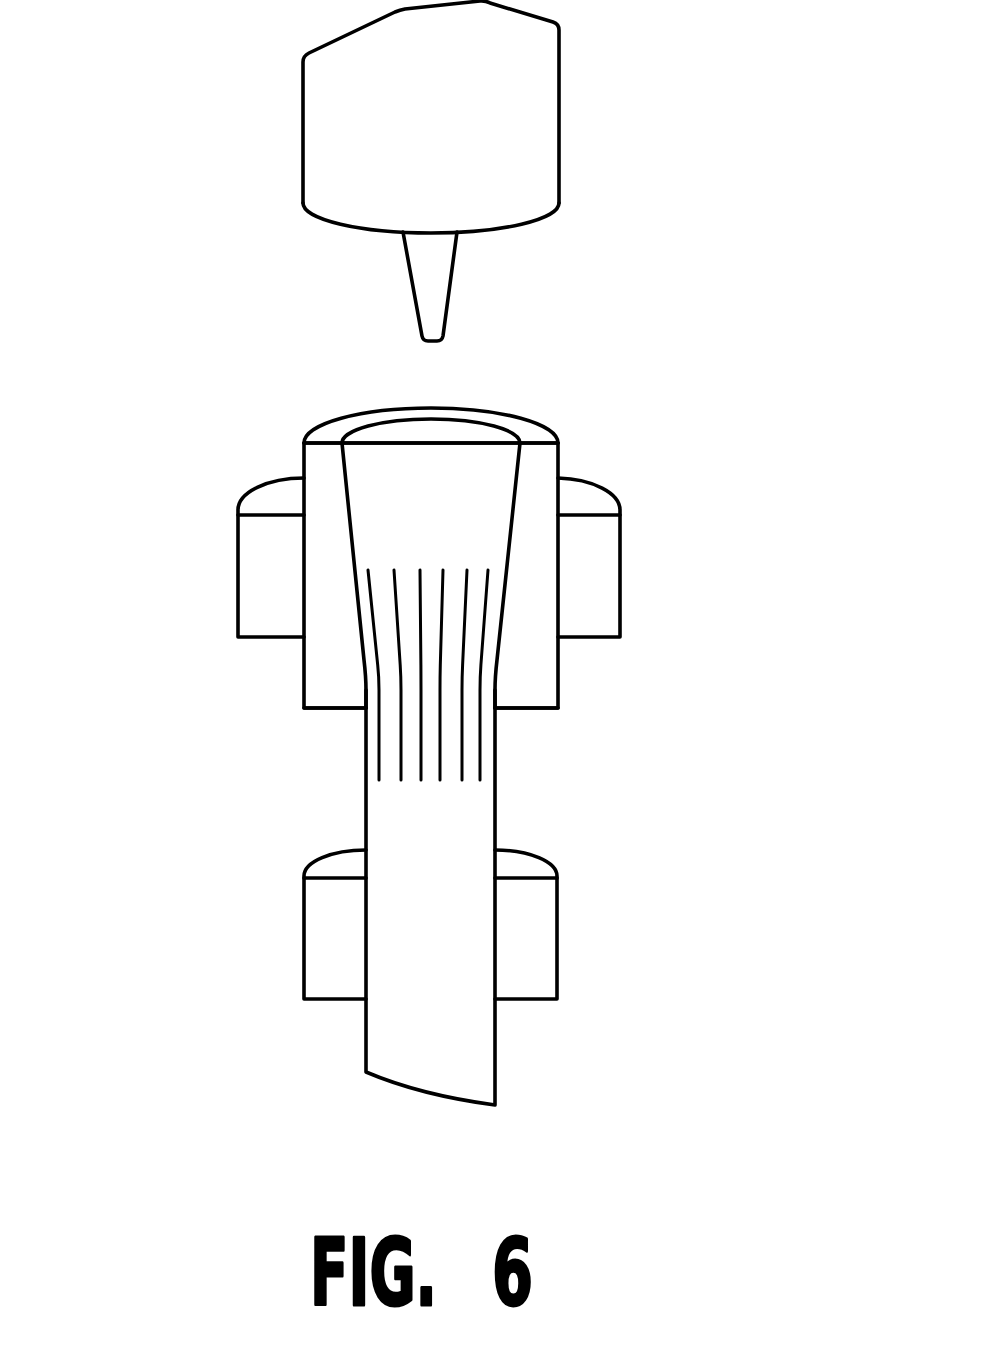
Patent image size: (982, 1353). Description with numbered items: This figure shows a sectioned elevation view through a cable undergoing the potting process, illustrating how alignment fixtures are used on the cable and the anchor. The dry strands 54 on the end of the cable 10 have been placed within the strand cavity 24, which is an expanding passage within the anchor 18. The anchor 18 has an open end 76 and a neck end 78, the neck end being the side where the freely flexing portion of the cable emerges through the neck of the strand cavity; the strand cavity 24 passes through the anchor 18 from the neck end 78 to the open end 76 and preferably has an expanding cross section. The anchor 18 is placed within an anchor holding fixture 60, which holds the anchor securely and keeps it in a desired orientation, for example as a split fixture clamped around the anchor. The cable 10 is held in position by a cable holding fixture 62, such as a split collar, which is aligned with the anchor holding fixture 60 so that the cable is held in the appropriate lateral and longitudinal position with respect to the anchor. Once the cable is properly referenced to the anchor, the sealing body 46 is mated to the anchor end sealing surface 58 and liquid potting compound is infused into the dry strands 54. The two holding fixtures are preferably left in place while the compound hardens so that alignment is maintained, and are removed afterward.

The cable 10 is at (392, 1039).
The anchor 18 is at (328, 571).
The strand cavity 24 is at (510, 577).
The sealing body 46 is at (328, 125).
The dry strands 54 is at (452, 671).
The anchor end sealing surface 58 is at (532, 432).
The anchor holding fixture 60 is at (598, 507).
The cable holding fixture 62 is at (517, 870).
The open end 76 is at (303, 442).
The neck end 78 is at (313, 710).